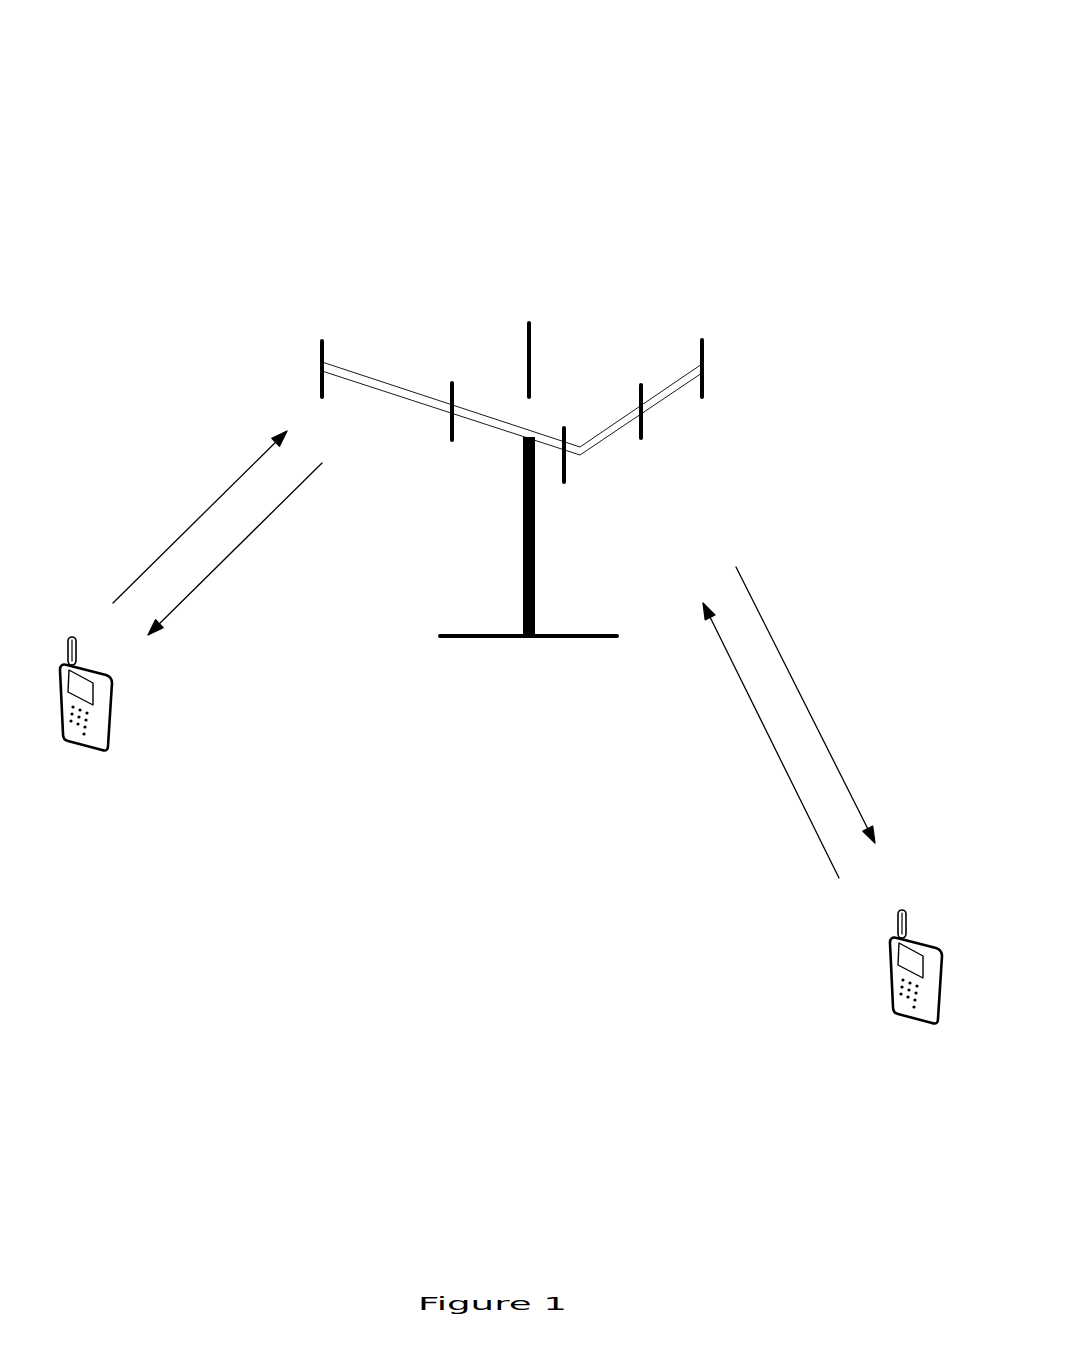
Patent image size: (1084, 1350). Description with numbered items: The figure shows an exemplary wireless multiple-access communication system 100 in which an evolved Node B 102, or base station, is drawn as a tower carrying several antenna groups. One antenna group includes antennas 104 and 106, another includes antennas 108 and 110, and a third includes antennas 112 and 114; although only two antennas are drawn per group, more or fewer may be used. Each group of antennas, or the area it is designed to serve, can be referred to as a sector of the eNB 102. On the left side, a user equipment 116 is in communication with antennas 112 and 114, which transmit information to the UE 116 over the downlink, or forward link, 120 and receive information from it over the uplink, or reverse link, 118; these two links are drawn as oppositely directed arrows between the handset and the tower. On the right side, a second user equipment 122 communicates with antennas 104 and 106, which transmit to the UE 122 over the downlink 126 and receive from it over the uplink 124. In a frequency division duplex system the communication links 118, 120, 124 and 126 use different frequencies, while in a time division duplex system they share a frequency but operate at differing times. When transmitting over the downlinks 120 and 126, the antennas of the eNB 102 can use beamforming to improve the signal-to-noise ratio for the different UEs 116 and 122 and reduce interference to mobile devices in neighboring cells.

The wireless multiple-access communication system 100 is at (845, 94).
The evolved Node B 102 is at (492, 638).
The antenna 104 is at (565, 476).
The antenna 106 is at (642, 428).
The antenna 108 is at (703, 383).
The antenna 110 is at (529, 330).
The antenna 112 is at (320, 349).
The antenna 114 is at (452, 432).
The user equipment 116 is at (112, 748).
The uplink 118 is at (203, 510).
The downlink 120 is at (182, 603).
The user equipment 122 is at (892, 1008).
The uplink 124 is at (758, 713).
The downlink 126 is at (788, 675).